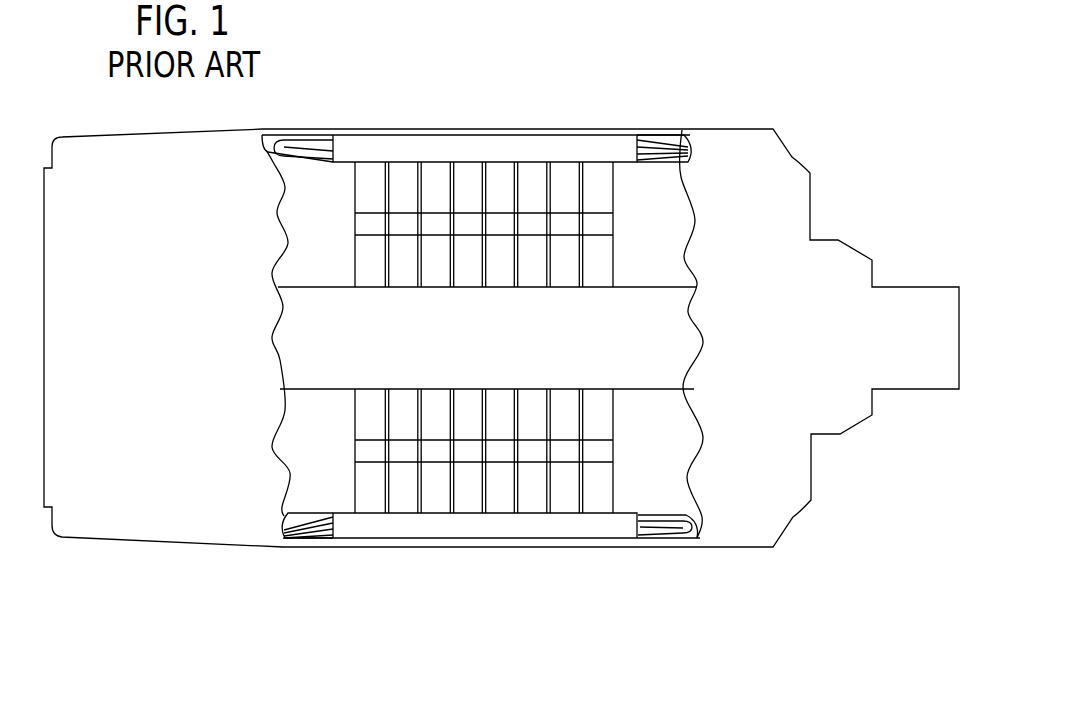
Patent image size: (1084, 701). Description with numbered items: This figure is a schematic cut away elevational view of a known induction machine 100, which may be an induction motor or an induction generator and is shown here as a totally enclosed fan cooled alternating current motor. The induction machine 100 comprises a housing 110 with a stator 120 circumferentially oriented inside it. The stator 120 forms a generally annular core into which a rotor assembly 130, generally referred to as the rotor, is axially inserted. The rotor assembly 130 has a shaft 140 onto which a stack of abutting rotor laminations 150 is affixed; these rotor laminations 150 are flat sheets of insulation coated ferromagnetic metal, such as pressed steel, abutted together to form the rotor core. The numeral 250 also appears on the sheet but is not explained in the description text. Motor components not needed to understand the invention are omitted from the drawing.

The induction machine 100 is at (803, 92).
The housing 110 is at (433, 542).
The stator 120 is at (543, 148).
The rotor assembly 130 is at (532, 520).
The shaft 140 is at (630, 337).
The rotor laminations 150 is at (528, 488).
The stator assembly 250 is at (620, 638).